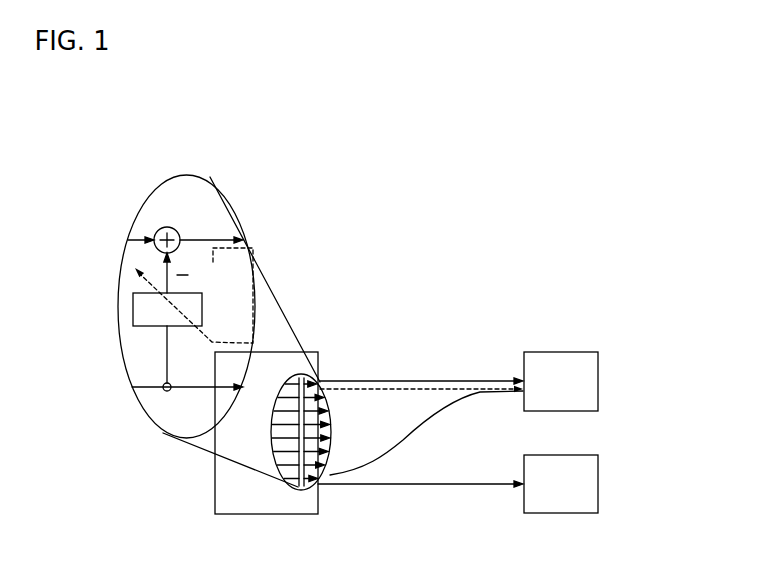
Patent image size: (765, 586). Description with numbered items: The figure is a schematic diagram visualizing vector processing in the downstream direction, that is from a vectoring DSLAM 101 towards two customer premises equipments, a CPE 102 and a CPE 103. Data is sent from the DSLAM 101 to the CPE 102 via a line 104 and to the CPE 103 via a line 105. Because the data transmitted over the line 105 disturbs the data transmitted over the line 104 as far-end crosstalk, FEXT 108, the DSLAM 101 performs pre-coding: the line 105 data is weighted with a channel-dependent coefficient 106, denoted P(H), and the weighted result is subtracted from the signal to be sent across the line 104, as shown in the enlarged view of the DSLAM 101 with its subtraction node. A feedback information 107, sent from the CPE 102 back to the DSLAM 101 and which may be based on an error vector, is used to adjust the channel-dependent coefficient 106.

The vectoring DSLAM 101 is at (263, 515).
The CPE 102 is at (598, 380).
The CPE 103 is at (598, 485).
The line 104 is at (202, 240).
The line 105 is at (185, 426).
The channel-dependent coefficient 106 is at (133, 309).
The feedback information 107 is at (213, 283).
The far-end crosstalk (FEXT) 108 is at (477, 393).